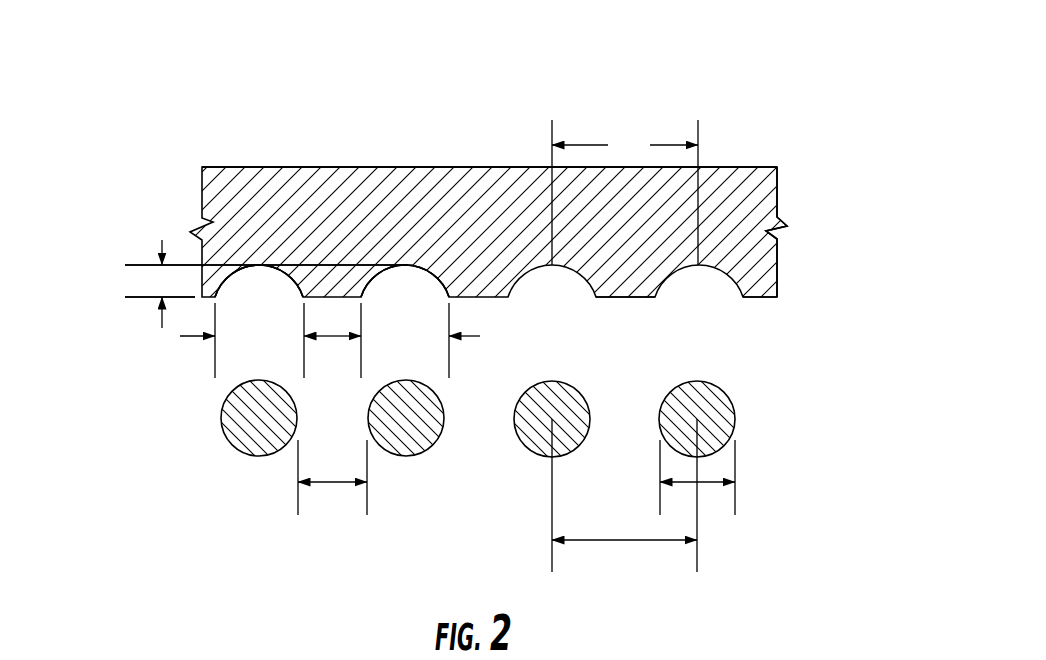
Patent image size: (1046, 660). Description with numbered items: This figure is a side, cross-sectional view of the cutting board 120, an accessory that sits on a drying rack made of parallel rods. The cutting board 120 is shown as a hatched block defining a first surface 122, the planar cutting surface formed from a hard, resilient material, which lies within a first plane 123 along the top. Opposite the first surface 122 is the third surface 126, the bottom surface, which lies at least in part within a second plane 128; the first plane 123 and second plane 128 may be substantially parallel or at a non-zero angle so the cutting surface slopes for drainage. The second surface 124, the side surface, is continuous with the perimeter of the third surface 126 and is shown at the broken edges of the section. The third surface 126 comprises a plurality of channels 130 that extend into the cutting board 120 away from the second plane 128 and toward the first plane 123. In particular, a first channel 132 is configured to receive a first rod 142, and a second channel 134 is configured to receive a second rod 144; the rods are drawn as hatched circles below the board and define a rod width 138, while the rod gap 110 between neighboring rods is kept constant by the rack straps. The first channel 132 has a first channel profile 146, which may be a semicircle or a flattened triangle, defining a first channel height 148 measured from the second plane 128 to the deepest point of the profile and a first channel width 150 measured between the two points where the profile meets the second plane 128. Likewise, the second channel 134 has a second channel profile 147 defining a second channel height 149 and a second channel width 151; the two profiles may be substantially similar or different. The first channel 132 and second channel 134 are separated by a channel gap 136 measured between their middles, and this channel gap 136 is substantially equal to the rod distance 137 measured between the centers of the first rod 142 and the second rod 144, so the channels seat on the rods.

The cutting board 120 is at (158, 62).
The first surface 122 is at (532, 168).
The first plane 123 is at (777, 167).
The second surface 124 is at (777, 203).
The third surface 126 is at (613, 297).
The second plane 128 is at (777, 297).
The plurality of channels 130 is at (747, 335).
The first channel 132 is at (298, 272).
The second channel 134 is at (426, 264).
The channel gap 136 is at (625, 192).
The rod distance 137 is at (620, 540).
The rod width 138 is at (705, 482).
The rod gap 110 is at (332, 482).
The first rod 142 is at (245, 465).
The second rod 144 is at (418, 470).
The first channel profile 146 is at (297, 278).
The second channel profile 147 is at (408, 265).
The first channel height 148 is at (253, 266).
The second channel height 149 is at (253, 250).
The first channel width 150 is at (256, 340).
The second channel width 151 is at (406, 340).